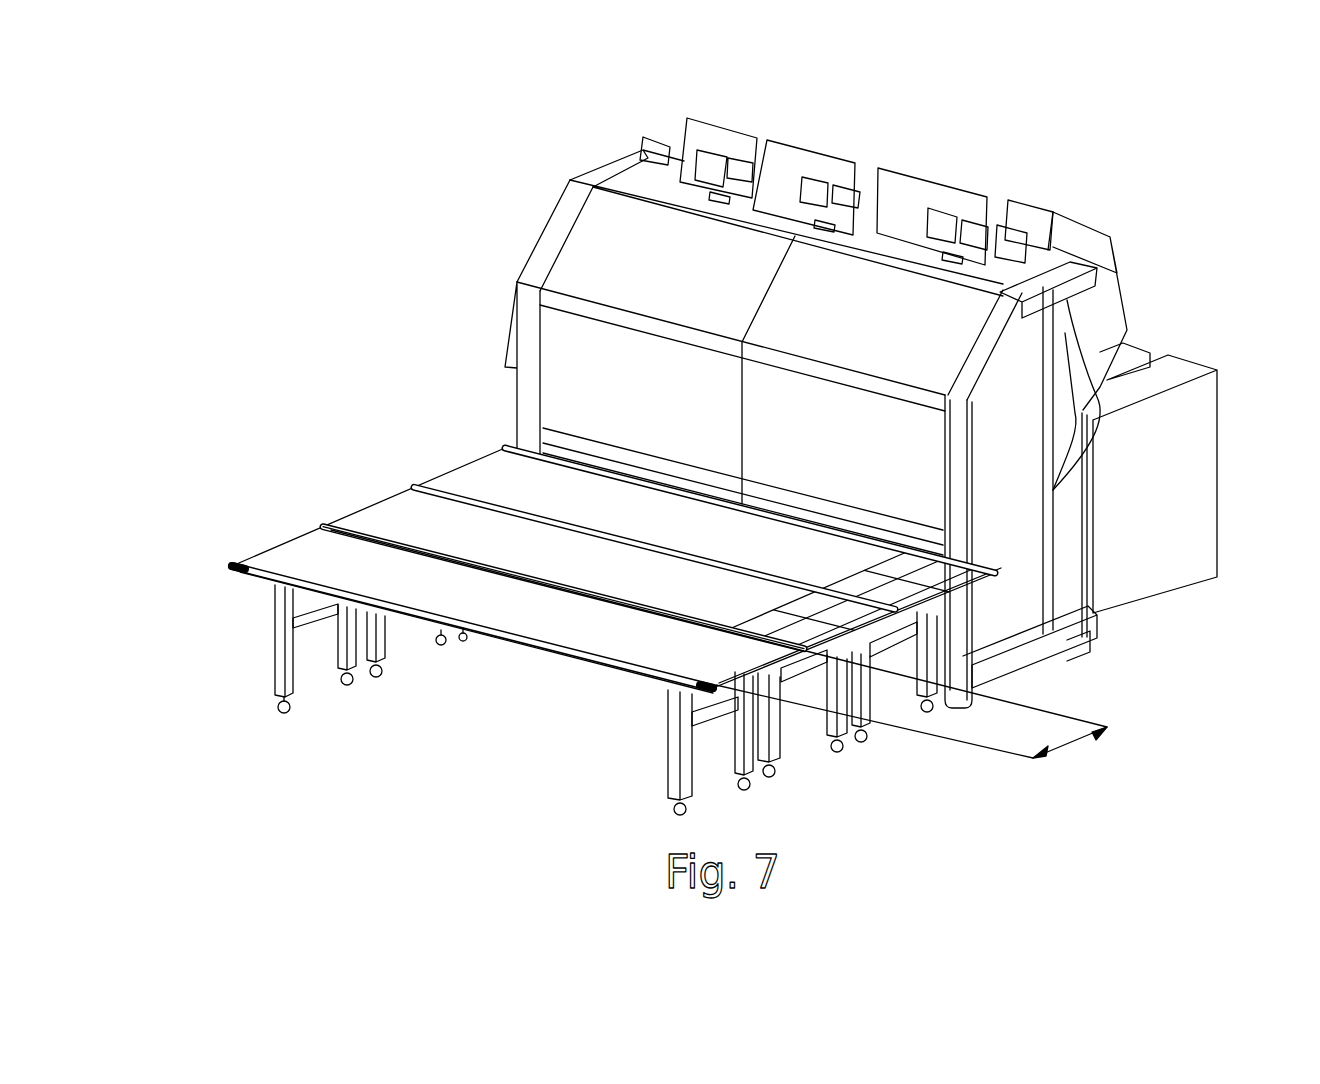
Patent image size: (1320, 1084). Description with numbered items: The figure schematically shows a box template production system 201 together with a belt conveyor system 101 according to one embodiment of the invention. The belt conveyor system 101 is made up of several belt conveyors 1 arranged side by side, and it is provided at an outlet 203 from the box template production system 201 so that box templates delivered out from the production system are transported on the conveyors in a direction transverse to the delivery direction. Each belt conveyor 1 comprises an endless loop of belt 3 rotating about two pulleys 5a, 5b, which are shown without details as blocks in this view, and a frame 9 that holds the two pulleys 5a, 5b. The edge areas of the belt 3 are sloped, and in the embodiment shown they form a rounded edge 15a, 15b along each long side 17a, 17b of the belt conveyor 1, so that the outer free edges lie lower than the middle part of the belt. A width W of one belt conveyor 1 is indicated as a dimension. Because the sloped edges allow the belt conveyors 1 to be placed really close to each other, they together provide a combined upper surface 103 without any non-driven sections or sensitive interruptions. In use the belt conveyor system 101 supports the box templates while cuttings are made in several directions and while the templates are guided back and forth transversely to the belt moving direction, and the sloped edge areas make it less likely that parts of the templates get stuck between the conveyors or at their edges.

The belt conveyor 1 is at (578, 540).
The belt 3 is at (293, 557).
The pulley 5a is at (690, 692).
The pulley 5b is at (230, 570).
The frame 9 is at (275, 667).
The rounded edge 15a is at (538, 650).
The rounded edge 15b is at (352, 532).
The long side 17a is at (490, 633).
The long side 17b is at (345, 517).
The belt conveyor system 101 is at (631, 543).
The combined upper surface 103 is at (575, 564).
The box template production system 201 is at (1110, 176).
The outlet 203 is at (886, 531).
The width W is at (911, 709).